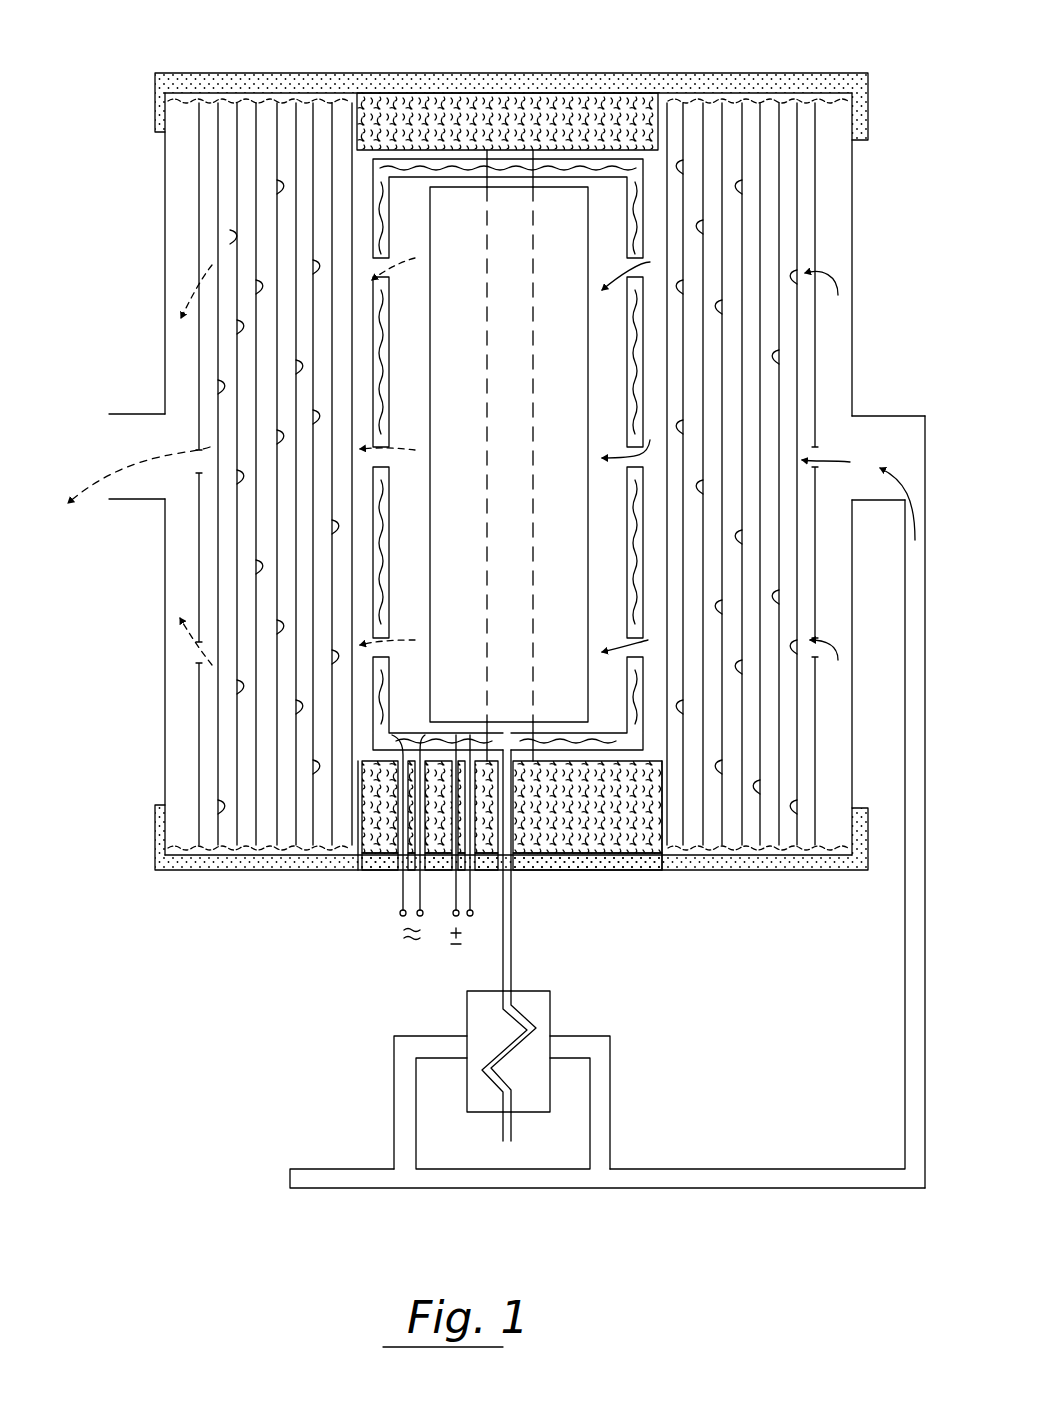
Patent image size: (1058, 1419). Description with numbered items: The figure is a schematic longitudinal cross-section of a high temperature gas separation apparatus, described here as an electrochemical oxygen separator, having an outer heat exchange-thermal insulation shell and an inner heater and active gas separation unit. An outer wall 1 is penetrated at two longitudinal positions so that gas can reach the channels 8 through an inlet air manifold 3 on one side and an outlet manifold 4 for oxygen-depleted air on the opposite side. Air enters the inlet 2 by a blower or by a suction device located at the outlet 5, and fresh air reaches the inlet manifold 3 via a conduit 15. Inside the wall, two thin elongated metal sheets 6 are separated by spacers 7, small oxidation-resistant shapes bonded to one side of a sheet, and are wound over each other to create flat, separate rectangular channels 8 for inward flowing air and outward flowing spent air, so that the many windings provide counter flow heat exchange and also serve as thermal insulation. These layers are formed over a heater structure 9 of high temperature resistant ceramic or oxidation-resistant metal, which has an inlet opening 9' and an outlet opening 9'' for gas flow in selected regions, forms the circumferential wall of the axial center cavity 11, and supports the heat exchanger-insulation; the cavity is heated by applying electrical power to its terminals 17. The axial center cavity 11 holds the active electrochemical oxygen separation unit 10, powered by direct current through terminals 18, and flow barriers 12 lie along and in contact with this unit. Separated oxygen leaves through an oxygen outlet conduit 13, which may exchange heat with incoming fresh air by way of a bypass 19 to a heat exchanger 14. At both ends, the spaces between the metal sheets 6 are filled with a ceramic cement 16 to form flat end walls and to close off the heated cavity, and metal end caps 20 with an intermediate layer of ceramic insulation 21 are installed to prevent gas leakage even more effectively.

The outer wall 1 is at (855, 222).
The inlet 2 is at (285, 1174).
The inlet air manifold 3 is at (840, 352).
The outlet manifold 4 is at (183, 727).
The outlet 5 is at (100, 437).
The metal sheets 6 is at (217, 817).
The spacers 7 is at (752, 797).
The channels 8 is at (783, 770).
The heater structure 9 is at (393, 362).
The inlet opening 9' is at (620, 367).
The outlet opening 9'' is at (389, 543).
The active electrochemical oxygen separation unit 10 is at (433, 444).
The axial center cavity 11 is at (391, 609).
The flow barriers 12 is at (537, 315).
The oxygen outlet conduit 13 is at (512, 922).
The heat exchanger 14 is at (550, 1006).
The conduit 15 is at (688, 1176).
The ceramic cement 16 is at (510, 105).
The terminals 17 is at (395, 895).
The terminals 18 is at (458, 940).
The bypass 19 is at (404, 1105).
The metal end caps 20 is at (748, 75).
The ceramic insulation 21 is at (628, 78).